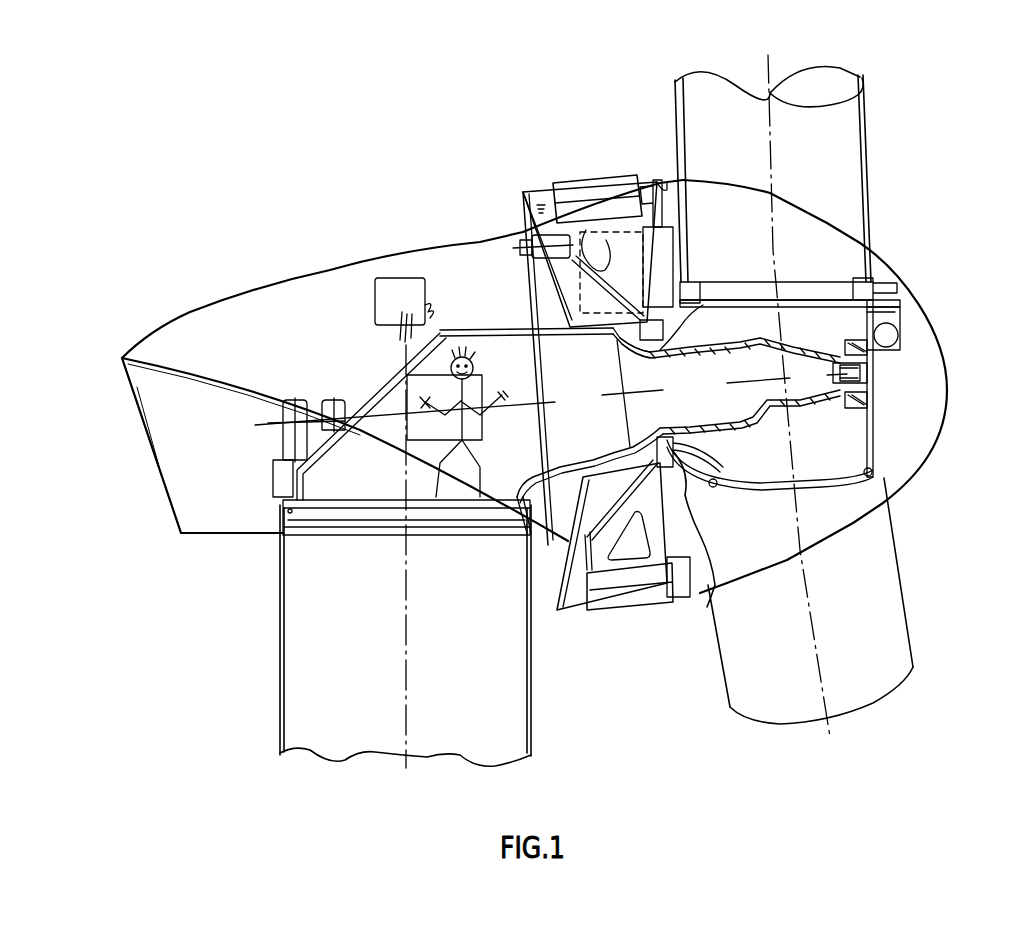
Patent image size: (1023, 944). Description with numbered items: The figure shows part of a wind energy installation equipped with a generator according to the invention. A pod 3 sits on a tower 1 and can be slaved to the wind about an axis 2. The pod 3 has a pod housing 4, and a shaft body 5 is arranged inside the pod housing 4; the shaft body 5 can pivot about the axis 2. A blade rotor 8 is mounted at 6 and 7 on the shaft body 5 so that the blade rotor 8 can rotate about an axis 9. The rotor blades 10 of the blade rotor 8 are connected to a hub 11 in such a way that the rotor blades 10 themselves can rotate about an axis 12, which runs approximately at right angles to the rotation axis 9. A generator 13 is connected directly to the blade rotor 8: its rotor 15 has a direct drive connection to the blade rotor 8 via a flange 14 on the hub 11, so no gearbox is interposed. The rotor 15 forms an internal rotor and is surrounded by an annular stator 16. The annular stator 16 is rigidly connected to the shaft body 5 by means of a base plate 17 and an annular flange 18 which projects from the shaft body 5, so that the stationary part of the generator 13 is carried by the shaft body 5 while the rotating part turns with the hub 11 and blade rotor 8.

The tower 1 is at (307, 636).
The axis 2 is at (410, 597).
The pod 3 is at (140, 472).
The pod housing 4 is at (186, 316).
The shaft body 5 is at (497, 330).
The mounting point 6 is at (707, 607).
The mounting point 7 is at (873, 368).
The blade rotor 8 is at (877, 208).
The rotation axis 9 is at (927, 365).
The rotor blades 10 is at (833, 143).
The hub 11 is at (823, 480).
The axis 12 is at (767, 140).
The generator 13 is at (570, 620).
The flange 14 is at (633, 262).
The rotor 15 is at (610, 593).
The annular stator 16 is at (563, 193).
The base plate 17 is at (527, 283).
The annular flange 18 is at (582, 332).